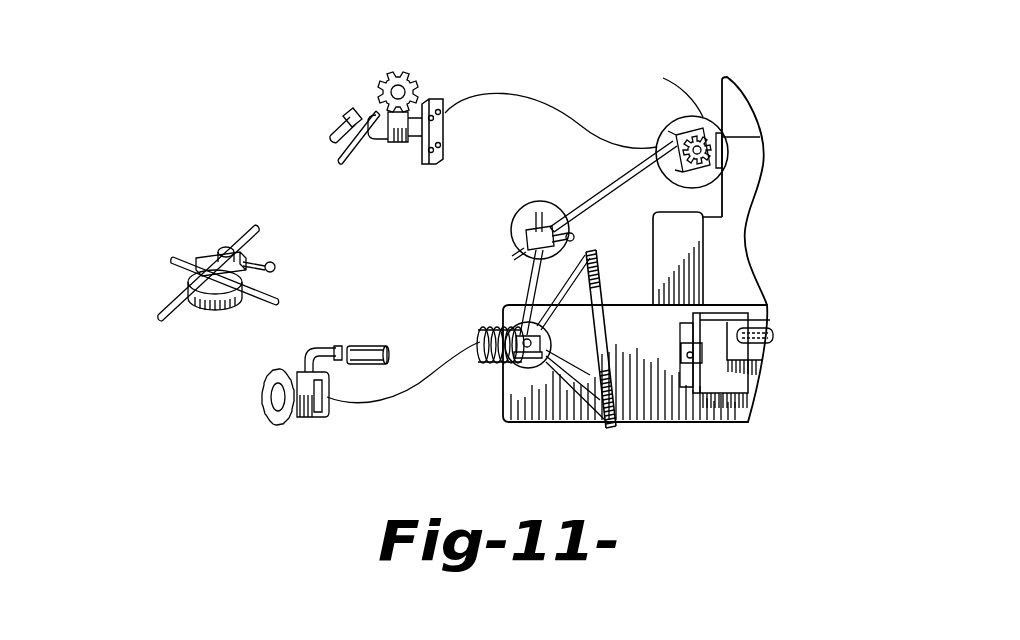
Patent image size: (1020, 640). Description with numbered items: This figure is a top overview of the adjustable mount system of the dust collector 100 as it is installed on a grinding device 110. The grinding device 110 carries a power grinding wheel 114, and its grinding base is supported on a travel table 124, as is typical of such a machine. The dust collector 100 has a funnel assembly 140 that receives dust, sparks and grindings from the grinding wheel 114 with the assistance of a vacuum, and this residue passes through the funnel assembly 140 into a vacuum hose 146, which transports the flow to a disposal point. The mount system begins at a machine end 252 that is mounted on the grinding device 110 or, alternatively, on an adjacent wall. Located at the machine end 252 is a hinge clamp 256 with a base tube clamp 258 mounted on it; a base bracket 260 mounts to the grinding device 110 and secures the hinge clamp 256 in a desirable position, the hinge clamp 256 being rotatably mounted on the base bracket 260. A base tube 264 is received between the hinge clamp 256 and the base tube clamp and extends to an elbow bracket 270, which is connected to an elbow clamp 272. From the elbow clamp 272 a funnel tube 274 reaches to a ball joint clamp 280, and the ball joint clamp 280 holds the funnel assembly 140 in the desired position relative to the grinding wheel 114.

The dust collector 100 is at (608, 340).
The grinding device 110 is at (663, 78).
The grinding wheel 114 is at (770, 328).
The travel table 124 is at (697, 407).
The funnel assembly 140 is at (577, 312).
The vacuum hose 146 is at (483, 367).
The machine end 252 is at (673, 180).
The hinge clamp 256 is at (368, 112).
The base tube clamp 258 is at (340, 113).
The base bracket 260 is at (722, 157).
The base tube 264 is at (330, 153).
The elbow bracket 270 is at (214, 300).
The elbow clamp 272 is at (207, 260).
The funnel tube 274 is at (178, 298).
The ball joint clamp 280 is at (330, 400).